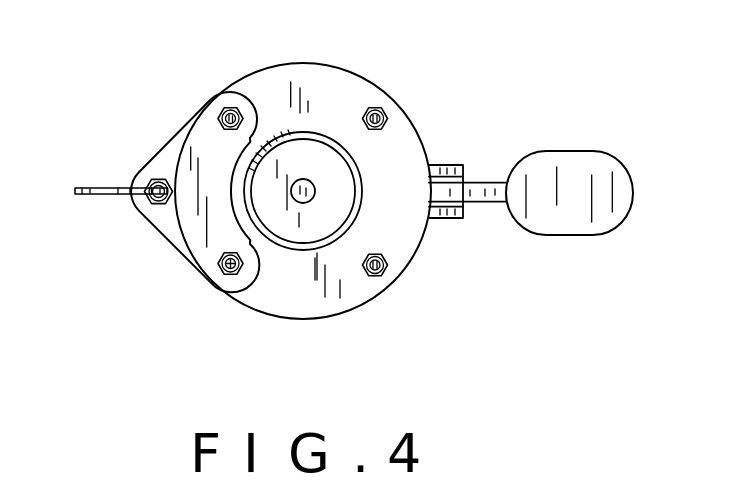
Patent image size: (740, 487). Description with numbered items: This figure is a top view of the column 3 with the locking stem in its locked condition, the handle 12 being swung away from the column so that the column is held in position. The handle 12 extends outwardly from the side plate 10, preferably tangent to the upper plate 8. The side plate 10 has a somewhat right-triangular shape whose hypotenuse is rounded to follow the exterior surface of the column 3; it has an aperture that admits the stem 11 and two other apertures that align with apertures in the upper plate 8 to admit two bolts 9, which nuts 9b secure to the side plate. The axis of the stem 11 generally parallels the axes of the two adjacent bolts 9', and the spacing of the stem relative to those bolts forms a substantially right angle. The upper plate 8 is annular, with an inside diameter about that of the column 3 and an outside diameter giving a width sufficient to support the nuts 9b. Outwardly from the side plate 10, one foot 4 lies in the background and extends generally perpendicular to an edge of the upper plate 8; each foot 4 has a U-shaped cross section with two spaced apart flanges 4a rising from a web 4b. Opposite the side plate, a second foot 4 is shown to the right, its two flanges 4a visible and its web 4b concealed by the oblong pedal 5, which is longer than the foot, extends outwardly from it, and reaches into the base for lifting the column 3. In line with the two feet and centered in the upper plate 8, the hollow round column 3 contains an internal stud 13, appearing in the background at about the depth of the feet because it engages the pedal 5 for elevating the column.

The column 3 is at (312, 134).
The foot 4 is at (437, 150).
The flanges 4a is at (463, 168).
The web 4b is at (463, 181).
The pedal 5 is at (630, 173).
The upper plate 8 is at (307, 298).
The bolts 9 is at (402, 194).
The adjacent bolts 9' is at (209, 216).
The nuts 9b is at (388, 113).
The side plate 10 is at (193, 226).
The stem 11 is at (153, 180).
The handle 12 is at (88, 195).
The internal stud 13 is at (298, 182).